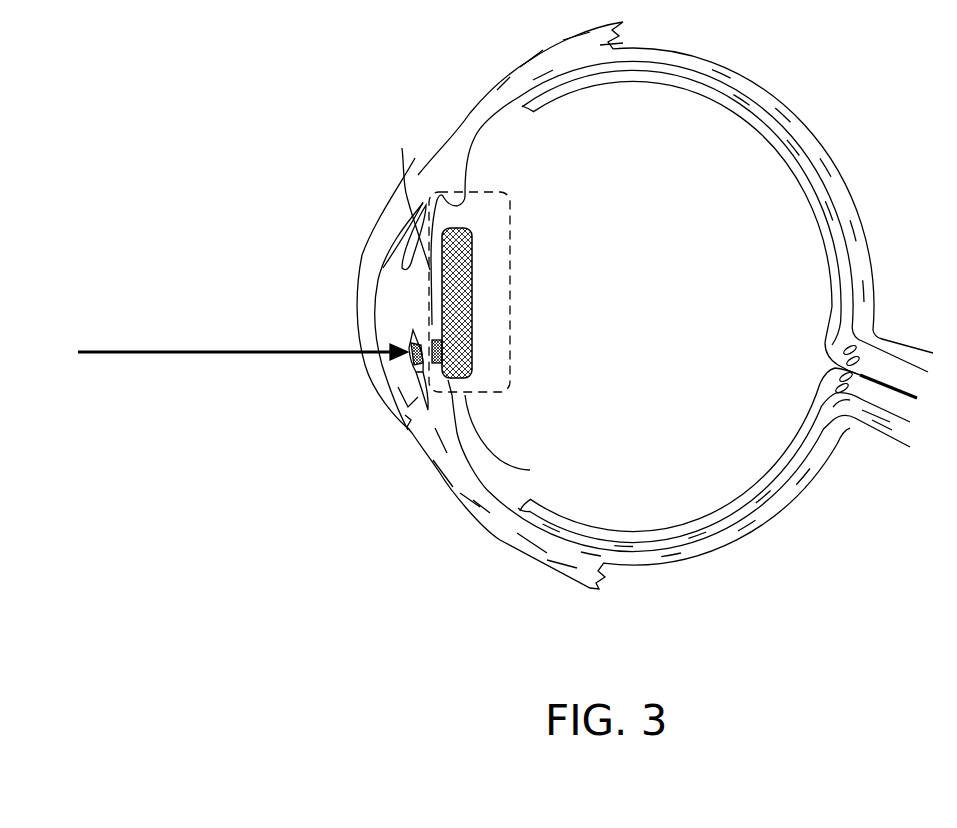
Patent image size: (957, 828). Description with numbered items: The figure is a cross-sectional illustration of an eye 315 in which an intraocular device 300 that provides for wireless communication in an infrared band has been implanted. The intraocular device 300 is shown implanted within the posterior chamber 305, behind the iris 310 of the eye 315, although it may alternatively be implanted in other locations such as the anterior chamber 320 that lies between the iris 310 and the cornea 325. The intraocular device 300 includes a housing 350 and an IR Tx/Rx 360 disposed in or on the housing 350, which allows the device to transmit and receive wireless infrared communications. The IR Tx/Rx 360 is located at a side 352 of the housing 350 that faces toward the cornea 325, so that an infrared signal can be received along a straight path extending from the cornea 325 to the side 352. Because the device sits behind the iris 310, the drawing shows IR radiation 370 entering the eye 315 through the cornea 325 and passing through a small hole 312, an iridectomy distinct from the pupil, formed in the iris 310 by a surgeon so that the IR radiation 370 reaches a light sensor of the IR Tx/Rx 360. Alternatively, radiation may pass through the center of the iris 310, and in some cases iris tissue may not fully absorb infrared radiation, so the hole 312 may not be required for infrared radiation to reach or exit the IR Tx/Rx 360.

The intraocular device 300 is at (498, 193).
The posterior chamber 305 is at (402, 148).
The iris 310 is at (423, 363).
The hole 312 is at (412, 350).
The eye 315 is at (727, 445).
The anterior chamber 320 is at (393, 255).
The cornea 325 is at (360, 303).
The housing 350 is at (462, 236).
The side of housing 352 is at (463, 285).
The IR Tx/Rx 360 is at (443, 370).
The IR radiation 370 is at (160, 351).